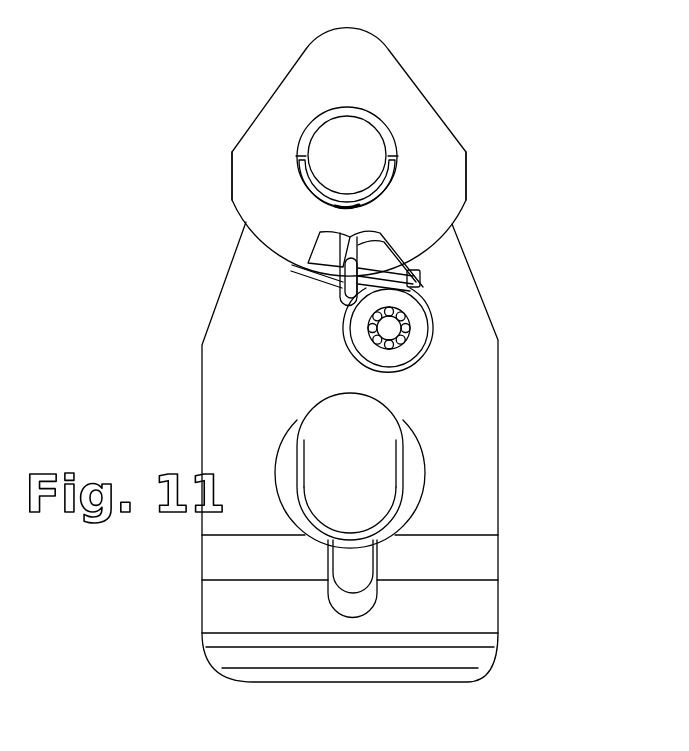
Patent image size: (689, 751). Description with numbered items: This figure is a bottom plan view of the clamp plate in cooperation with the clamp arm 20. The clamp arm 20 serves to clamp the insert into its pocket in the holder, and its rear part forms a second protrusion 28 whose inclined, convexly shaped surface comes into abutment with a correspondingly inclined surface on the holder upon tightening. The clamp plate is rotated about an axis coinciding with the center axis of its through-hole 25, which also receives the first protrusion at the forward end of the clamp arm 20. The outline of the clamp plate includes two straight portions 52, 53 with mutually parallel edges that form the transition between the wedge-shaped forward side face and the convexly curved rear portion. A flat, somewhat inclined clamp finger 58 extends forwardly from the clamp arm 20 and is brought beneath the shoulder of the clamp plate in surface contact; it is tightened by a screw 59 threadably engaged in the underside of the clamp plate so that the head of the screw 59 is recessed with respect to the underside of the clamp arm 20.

The clamp arm 20 is at (500, 422).
The central hole 25 is at (357, 150).
The second protrusion 28 is at (466, 656).
The straight portion 52 is at (232, 172).
The straight portion 53 is at (466, 175).
The clamp finger 58 is at (377, 253).
The screw 59 is at (392, 326).